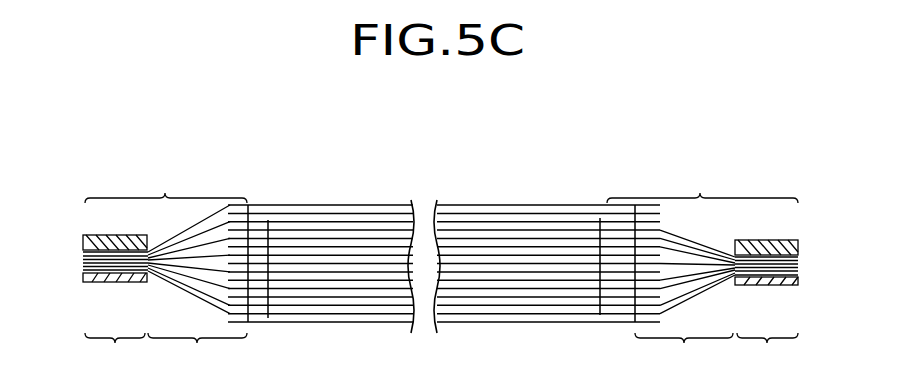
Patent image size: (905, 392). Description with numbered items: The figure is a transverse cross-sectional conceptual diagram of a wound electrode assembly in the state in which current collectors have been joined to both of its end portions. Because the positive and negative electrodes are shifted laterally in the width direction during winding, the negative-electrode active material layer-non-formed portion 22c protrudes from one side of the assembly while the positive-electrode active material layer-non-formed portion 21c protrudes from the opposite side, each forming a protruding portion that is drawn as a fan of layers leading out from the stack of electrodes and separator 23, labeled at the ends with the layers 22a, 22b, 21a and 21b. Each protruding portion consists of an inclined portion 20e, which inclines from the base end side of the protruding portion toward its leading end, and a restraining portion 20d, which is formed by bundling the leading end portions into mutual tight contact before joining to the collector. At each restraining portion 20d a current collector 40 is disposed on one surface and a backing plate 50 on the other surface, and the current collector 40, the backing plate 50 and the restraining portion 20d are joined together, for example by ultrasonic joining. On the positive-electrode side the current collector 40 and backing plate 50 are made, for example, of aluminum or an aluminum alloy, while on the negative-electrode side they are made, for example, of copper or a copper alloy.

The current collector 40 is at (84, 241).
The backing plate 50 is at (84, 281).
The negative-electrode active material layer-non-formed portion 22c is at (166, 182).
The positive-electrode active material layer-non-formed portion 21c is at (702, 182).
The restraining portion 20d is at (441, 352).
The inclined portion 20e is at (440, 352).
The separator 23 is at (288, 356).
The second signal wiring 22a is at (328, 230).
The second ground wiring 22b is at (297, 228).
The first signal wiring 21a is at (384, 222).
The first ground wiring 21b is at (355, 227).